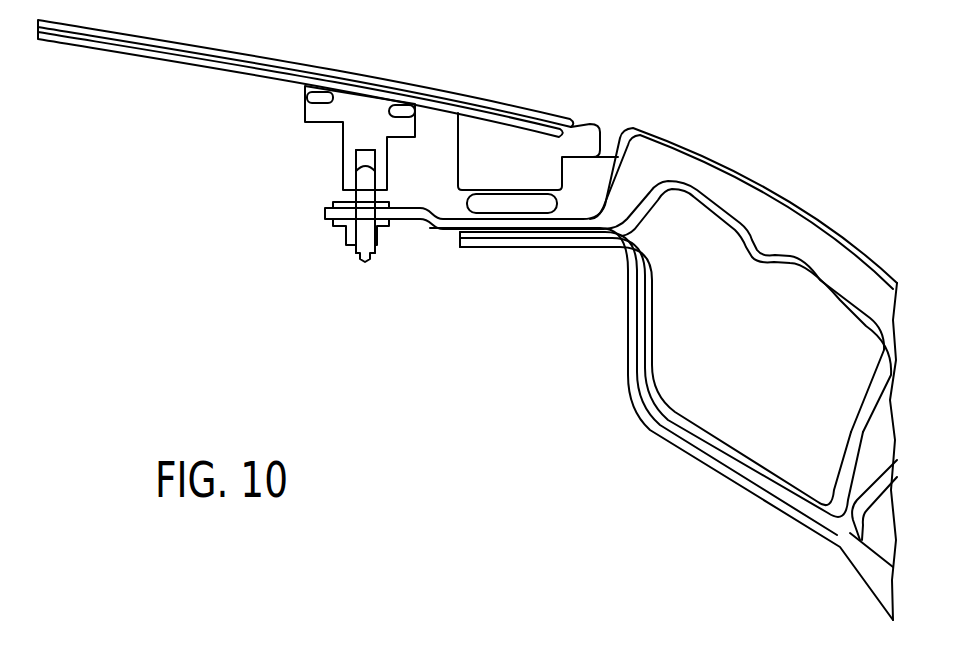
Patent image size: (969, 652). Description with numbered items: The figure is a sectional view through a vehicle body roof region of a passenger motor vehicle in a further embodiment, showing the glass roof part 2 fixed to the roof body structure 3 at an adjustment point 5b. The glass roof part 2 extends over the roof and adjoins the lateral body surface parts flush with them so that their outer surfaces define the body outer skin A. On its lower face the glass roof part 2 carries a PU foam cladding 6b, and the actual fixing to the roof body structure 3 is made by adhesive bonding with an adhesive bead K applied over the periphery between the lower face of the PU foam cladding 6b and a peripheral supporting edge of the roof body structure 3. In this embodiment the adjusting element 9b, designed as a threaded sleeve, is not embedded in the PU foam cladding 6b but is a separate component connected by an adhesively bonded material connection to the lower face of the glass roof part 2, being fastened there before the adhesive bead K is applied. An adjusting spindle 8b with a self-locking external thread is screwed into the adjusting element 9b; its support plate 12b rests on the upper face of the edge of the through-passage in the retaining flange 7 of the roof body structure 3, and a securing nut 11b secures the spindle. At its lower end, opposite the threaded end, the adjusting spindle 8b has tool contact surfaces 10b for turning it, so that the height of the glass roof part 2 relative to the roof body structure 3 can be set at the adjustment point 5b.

The glass roof part 2 is at (423, 86).
The adjusting element 9b is at (342, 146).
The adjusting spindle 8b is at (358, 197).
The PU foam cladding 6b is at (468, 152).
The support plate 12b is at (399, 208).
The adhesive bead K is at (511, 203).
The securing nut 11b is at (342, 234).
The retaining flange 7 is at (416, 221).
The tool contact surfaces 10b is at (367, 263).
The adjustment point 5b is at (337, 254).
The roof body structure 3 is at (636, 354).
The body outer skin A is at (743, 172).